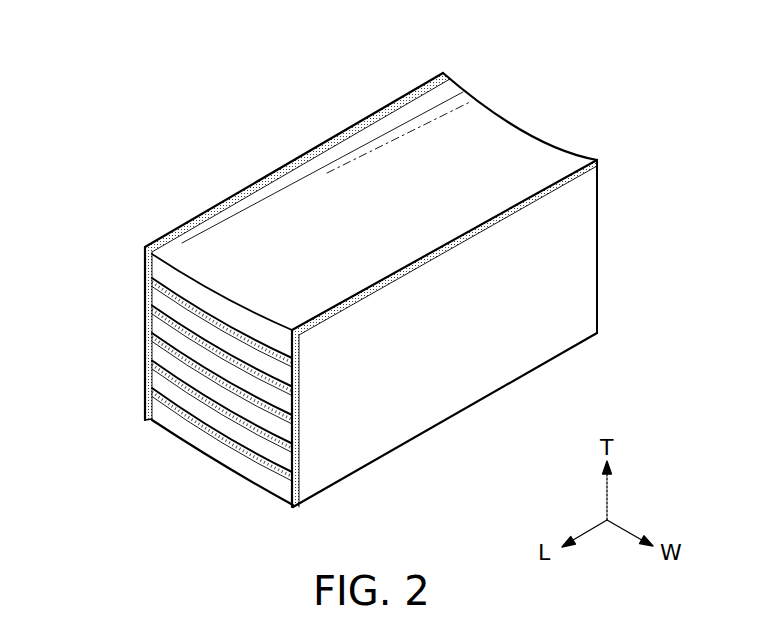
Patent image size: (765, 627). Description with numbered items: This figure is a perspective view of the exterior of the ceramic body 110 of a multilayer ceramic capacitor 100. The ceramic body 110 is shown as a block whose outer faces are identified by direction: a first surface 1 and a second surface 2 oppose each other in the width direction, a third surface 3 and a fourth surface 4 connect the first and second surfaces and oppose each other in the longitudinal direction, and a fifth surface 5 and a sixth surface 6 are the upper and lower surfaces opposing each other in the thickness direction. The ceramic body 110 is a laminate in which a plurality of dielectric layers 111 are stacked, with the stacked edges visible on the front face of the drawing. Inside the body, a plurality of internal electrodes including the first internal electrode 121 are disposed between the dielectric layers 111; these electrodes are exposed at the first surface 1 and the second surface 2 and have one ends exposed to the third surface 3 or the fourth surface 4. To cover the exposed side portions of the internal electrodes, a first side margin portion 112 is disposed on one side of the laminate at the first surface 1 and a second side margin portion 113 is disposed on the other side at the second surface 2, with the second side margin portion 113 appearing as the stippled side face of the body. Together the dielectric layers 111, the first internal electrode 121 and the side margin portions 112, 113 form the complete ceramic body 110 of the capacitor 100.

The multilayer ceramic capacitor 100 is at (188, 49).
The first surface 1 is at (316, 210).
The second surface 2 is at (472, 341).
The third surface 3 is at (222, 394).
The fourth surface 4 is at (508, 176).
The fifth surface 5 is at (397, 175).
The sixth surface 6 is at (378, 420).
The ceramic body 110 is at (357, 197).
The dielectric layers 111 is at (165, 352).
The first side margin portion 112 is at (217, 207).
The second side margin portion 113 is at (433, 393).
The first internal electrode 121 is at (165, 295).